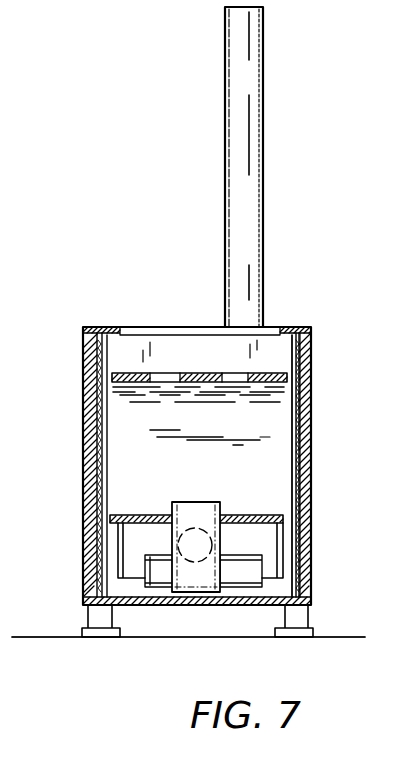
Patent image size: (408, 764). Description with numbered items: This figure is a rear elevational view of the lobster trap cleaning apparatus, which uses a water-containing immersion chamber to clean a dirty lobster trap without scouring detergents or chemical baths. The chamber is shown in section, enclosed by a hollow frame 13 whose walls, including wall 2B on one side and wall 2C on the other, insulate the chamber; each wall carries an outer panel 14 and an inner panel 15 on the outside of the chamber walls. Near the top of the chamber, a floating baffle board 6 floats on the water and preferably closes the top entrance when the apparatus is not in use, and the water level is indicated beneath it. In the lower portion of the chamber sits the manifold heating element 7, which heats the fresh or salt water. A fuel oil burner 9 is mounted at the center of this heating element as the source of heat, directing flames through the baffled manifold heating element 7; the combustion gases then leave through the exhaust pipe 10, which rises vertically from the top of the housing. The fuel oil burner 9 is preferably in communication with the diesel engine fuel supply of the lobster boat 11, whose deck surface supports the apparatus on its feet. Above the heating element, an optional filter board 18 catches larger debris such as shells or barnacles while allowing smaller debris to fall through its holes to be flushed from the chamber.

The exhaust pipe 10 is at (235, 100).
The floating baffle board 6 is at (189, 355).
The hollow frame 13 is at (312, 362).
The outer panel 14 is at (310, 395).
The wall 2B is at (140, 428).
The inner panel 15 is at (293, 427).
The wall 2C is at (310, 443).
The filter board 18 is at (262, 504).
The fuel oil burner 9 is at (187, 512).
The manifold heating element 7 is at (265, 542).
The lobster boat 11 is at (50, 637).